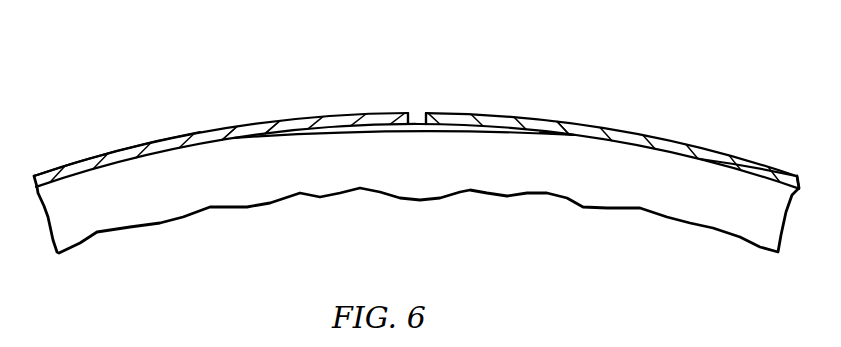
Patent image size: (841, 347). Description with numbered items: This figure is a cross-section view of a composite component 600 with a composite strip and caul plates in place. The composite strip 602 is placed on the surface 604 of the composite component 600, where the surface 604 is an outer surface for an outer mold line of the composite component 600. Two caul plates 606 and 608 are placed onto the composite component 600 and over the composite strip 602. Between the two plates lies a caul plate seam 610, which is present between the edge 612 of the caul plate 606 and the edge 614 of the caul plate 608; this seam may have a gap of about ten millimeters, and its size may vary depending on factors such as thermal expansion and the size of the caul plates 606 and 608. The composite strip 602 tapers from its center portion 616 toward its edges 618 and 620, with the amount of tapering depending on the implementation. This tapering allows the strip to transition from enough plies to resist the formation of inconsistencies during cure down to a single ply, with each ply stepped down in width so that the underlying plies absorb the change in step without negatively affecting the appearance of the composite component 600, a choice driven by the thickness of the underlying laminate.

The composite component 600 is at (683, 223).
The composite strip 602 is at (568, 138).
The surface 604 is at (762, 172).
The caul plate 606 is at (223, 125).
The caul plate 608 is at (612, 128).
The caul plate seam 610 is at (415, 95).
The edge 612 is at (409, 113).
The edge 614 is at (425, 113).
The center portion 616 is at (416, 128).
The edge 618 is at (260, 129).
The edge 620 is at (573, 127).